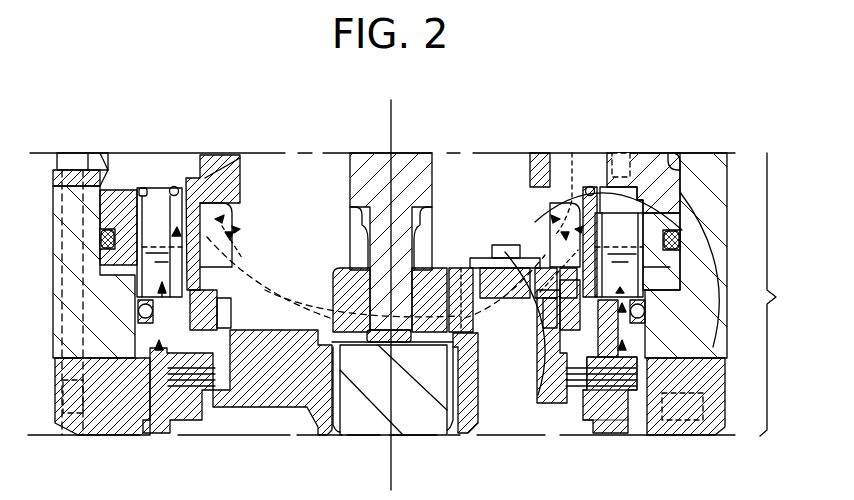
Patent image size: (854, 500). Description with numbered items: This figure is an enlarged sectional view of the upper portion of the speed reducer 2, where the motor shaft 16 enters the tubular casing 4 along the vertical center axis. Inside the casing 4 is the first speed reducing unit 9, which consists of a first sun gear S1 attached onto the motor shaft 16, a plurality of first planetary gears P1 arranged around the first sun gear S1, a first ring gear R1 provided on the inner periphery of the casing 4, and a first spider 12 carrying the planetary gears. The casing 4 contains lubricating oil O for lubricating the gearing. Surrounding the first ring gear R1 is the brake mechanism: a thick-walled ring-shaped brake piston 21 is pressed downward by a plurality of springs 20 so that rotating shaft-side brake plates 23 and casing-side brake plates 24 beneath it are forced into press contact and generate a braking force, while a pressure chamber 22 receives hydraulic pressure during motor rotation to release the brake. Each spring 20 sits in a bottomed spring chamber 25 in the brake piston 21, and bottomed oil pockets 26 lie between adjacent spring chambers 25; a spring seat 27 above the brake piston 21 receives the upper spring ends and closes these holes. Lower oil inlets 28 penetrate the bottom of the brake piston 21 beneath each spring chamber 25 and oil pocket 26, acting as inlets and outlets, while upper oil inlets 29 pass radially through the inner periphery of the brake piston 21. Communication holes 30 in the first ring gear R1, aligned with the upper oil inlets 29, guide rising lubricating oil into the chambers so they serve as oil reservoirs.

The speed reducer 2 is at (303, 150).
The reducer casing 4 is at (55, 340).
The first speed reducing unit 9 is at (780, 294).
The first spider 12 is at (548, 406).
The motor shaft 16 is at (432, 171).
The springs 20 is at (190, 198).
The brake piston 21 is at (628, 190).
The pressure chamber 22 is at (656, 278).
The rotating shaft-side brake plates 23 is at (603, 394).
The casing-side brake plates 24 is at (626, 397).
The spring chambers 25 is at (157, 195).
The oil pockets 26 is at (617, 212).
The spring seat 27 is at (704, 168).
The lower oil inlets 28 is at (140, 308).
The upper oil inlets 29 is at (176, 189).
The communication holes 30 is at (205, 226).
The lubricating oil O is at (266, 288).
The first sun gear S1 is at (333, 288).
The first planetary gears P1 is at (456, 272).
The first ring gear R1 is at (521, 341).